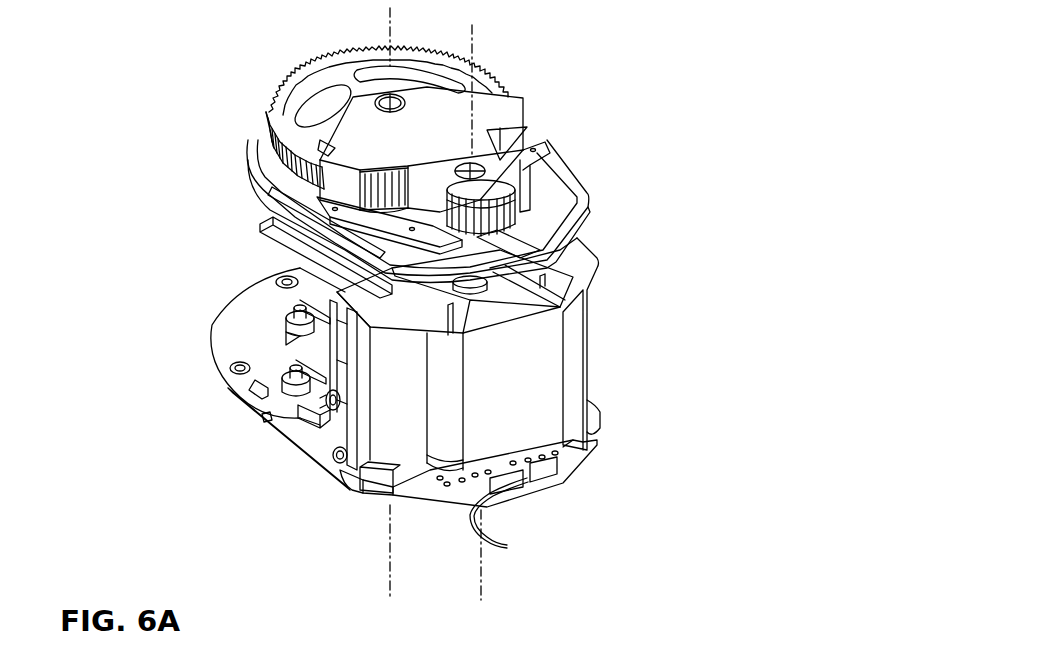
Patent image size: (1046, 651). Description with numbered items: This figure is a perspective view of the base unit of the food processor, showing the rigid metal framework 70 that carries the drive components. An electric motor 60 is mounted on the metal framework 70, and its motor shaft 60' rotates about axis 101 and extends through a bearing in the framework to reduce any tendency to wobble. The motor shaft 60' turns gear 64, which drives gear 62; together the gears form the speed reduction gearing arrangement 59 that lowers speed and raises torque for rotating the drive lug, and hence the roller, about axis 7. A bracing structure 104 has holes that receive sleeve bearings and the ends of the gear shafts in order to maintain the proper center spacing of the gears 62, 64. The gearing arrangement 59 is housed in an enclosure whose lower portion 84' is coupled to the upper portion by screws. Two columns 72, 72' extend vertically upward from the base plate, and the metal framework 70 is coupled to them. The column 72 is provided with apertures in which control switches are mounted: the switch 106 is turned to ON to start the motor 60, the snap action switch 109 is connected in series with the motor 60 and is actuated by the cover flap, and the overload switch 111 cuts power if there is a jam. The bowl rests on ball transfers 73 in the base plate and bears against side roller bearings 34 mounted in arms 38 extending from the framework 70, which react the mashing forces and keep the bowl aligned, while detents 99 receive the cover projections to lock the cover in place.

The axis 7 is at (398, 16).
The axis 101 is at (477, 46).
The gear 62 is at (502, 80).
The bracing structure 104 is at (503, 115).
The speed reduction gearing arrangement 59 is at (393, 170).
The motor shaft 60' is at (578, 164).
The gear 64 is at (519, 202).
The lower portion of housing 84' is at (310, 212).
The metal framework 70 is at (297, 240).
The ball transfers 73 is at (285, 278).
The snap action switch 109 is at (327, 337).
The arms 38 is at (303, 372).
The side roller bearings 34 is at (282, 386).
The detents 99 is at (262, 419).
The switch 106 is at (333, 405).
The column 72 is at (198, 449).
The overload switch 111 is at (365, 457).
The electric motor 60 is at (505, 360).
The column 72' is at (633, 344).